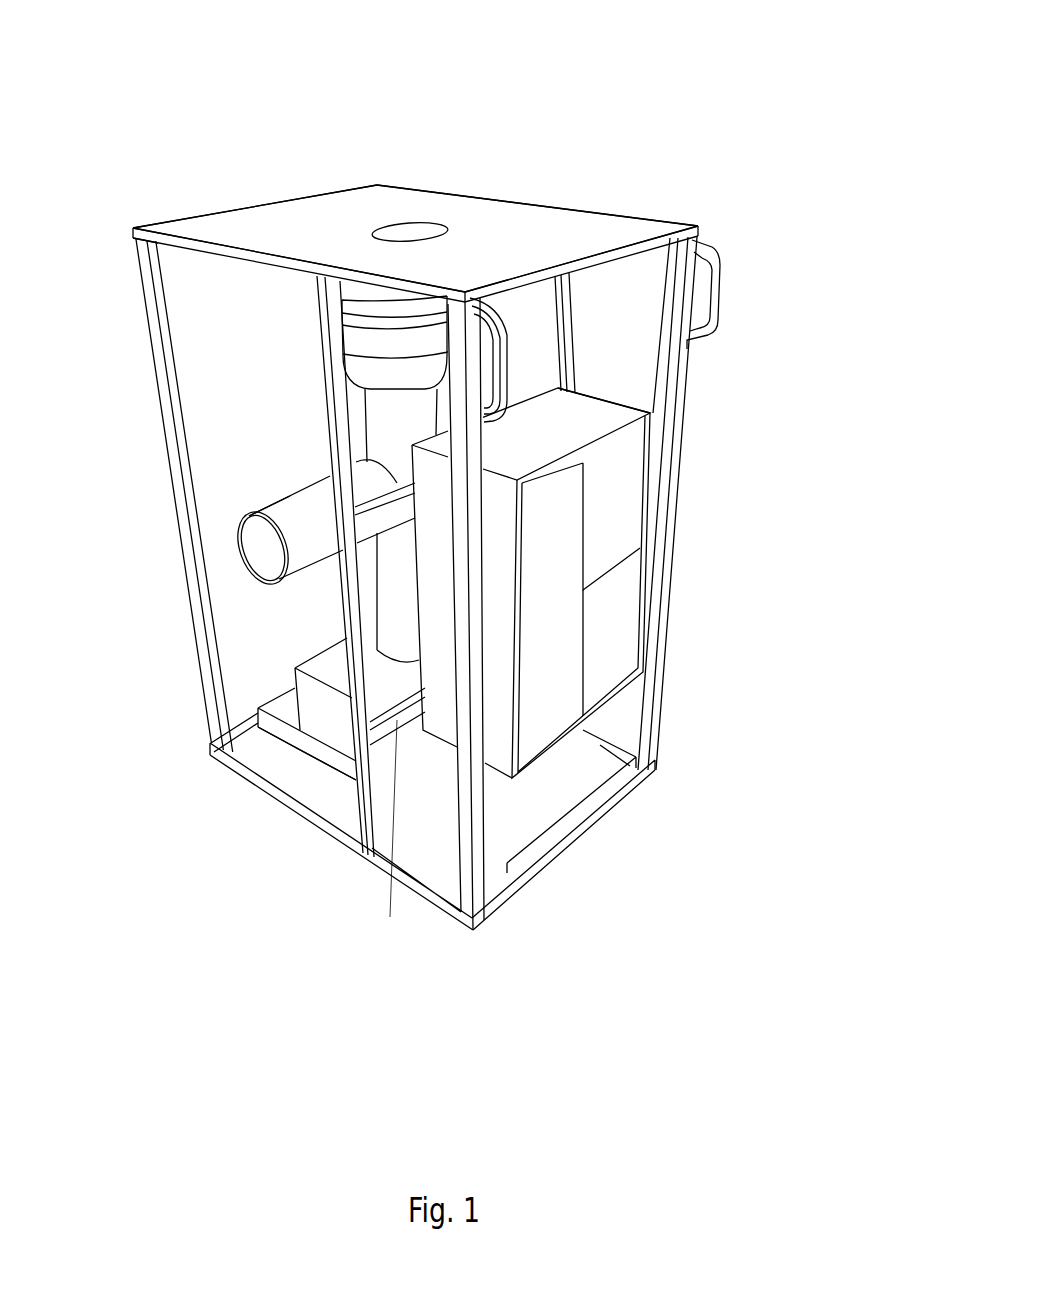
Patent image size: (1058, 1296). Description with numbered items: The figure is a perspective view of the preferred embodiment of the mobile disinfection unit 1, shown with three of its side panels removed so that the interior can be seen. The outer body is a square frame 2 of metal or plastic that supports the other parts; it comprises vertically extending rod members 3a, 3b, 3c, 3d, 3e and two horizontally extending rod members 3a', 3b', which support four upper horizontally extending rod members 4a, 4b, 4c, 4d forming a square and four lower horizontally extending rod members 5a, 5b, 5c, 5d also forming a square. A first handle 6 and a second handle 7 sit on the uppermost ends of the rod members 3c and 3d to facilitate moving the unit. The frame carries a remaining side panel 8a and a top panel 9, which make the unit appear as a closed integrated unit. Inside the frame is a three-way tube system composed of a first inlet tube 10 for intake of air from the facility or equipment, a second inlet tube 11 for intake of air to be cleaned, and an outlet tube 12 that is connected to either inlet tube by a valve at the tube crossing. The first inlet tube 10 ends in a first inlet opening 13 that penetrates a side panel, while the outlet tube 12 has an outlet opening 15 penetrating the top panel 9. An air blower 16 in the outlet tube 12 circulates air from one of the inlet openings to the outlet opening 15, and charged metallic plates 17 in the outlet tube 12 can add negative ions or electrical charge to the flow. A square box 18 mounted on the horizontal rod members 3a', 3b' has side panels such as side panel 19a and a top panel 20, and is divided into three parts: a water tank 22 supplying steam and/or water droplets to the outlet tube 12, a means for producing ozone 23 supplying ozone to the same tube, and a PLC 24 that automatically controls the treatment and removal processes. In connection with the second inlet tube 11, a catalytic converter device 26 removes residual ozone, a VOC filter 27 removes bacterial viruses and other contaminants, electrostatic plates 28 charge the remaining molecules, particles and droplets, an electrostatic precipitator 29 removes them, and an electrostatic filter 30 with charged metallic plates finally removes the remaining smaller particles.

The mobile disinfection unit 1 is at (702, 80).
The square frame 2 is at (150, 372).
The vertically extending rod member 3a is at (161, 496).
The horizontally extending rod member 3a' is at (310, 468).
The vertically extending rod member 3b is at (334, 598).
The horizontally extending rod member 3b' is at (388, 835).
The vertically extending rod member 3c is at (480, 878).
The vertically extending rod member 3d is at (670, 443).
The vertically extending rod member 3e is at (562, 345).
The upper horizontally extending rod member 4a is at (186, 243).
The upper horizontally extending rod member 4b is at (634, 246).
The upper horizontally extending rod member 4c is at (505, 199).
The upper horizontally extending rod member 4d is at (258, 212).
The lower horizontally extending rod member 5a is at (245, 767).
The lower horizontally extending rod member 5b is at (605, 807).
The lower horizontally extending rod member 5c is at (635, 766).
The lower horizontally extending rod member 5d is at (230, 742).
The first handle 6 is at (486, 300).
The second handle 7 is at (720, 262).
The side panel 8a is at (205, 309).
The top panel 9 is at (249, 242).
The first inlet tube 10 is at (285, 513).
The second inlet tube 11 is at (392, 625).
The outlet tube 12 is at (380, 428).
The first inlet opening 13 is at (258, 556).
The outlet opening 15 is at (393, 236).
The air blower 16 is at (358, 342).
The charged metallic plates 17 is at (358, 292).
The square box 18 is at (620, 402).
The side panel 19a is at (498, 764).
The top panel 20 is at (537, 434).
The water tank 22 is at (595, 515).
The means for producing ozone 23 is at (595, 645).
The PLC 24 is at (534, 624).
The catalytic converter device 26 is at (347, 767).
The VOC filter 27 is at (310, 745).
The electrostatic plates 28 is at (303, 712).
The electrostatic precipitator 29 is at (307, 685).
The electrostatic filter 30 is at (328, 657).